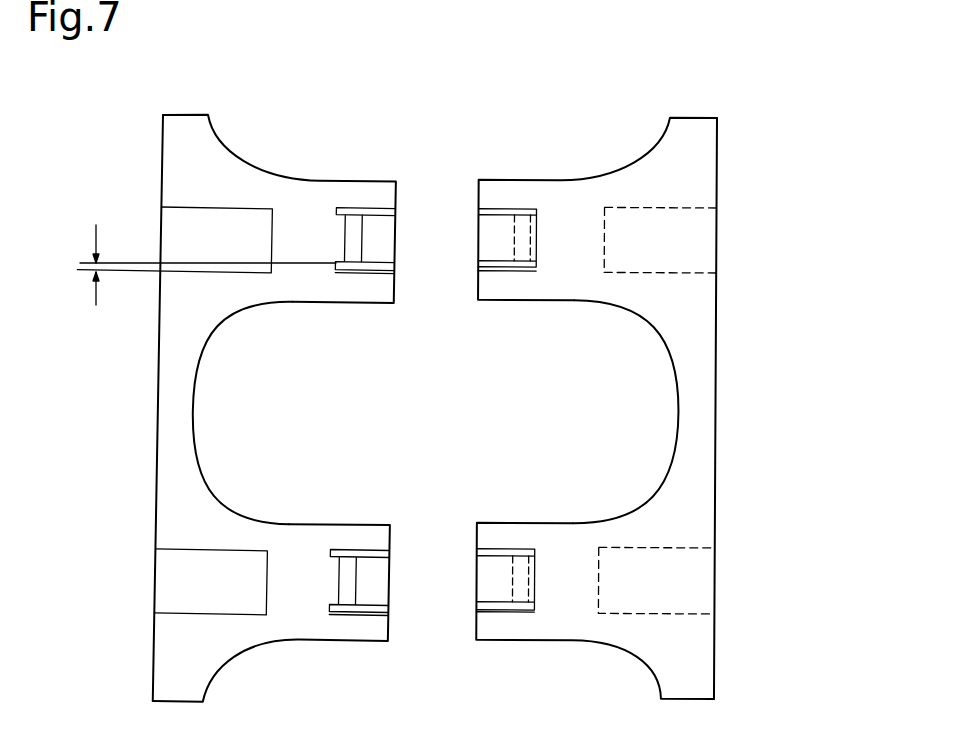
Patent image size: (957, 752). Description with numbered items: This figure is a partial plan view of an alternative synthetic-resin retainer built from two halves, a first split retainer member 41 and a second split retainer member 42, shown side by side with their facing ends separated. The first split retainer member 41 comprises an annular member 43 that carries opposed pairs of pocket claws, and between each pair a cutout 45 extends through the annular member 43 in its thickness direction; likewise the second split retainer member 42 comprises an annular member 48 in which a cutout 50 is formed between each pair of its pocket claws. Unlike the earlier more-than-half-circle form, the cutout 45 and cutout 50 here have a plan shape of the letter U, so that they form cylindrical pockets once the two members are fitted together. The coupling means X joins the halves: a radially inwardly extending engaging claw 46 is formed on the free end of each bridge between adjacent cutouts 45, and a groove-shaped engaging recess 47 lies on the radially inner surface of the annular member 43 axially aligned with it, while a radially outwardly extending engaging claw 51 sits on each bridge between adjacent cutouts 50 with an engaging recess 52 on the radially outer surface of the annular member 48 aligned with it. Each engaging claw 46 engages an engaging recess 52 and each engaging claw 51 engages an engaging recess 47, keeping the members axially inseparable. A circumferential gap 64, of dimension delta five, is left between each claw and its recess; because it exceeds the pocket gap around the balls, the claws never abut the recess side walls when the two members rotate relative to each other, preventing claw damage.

The first split retainer member 41 is at (719, 153).
The second split retainer member 42 is at (162, 151).
The annular member 43 is at (703, 410).
The cutout 45 is at (660, 356).
The engaging claw 46 is at (523, 228).
The engaging recess 47 is at (690, 209).
The annular member 48 is at (172, 477).
The cutout 50 is at (196, 396).
The engaging claw 51 is at (353, 222).
The engaging recess 52 is at (231, 209).
The circumferential gap 64 is at (213, 268).
The coupling means X is at (405, 218).